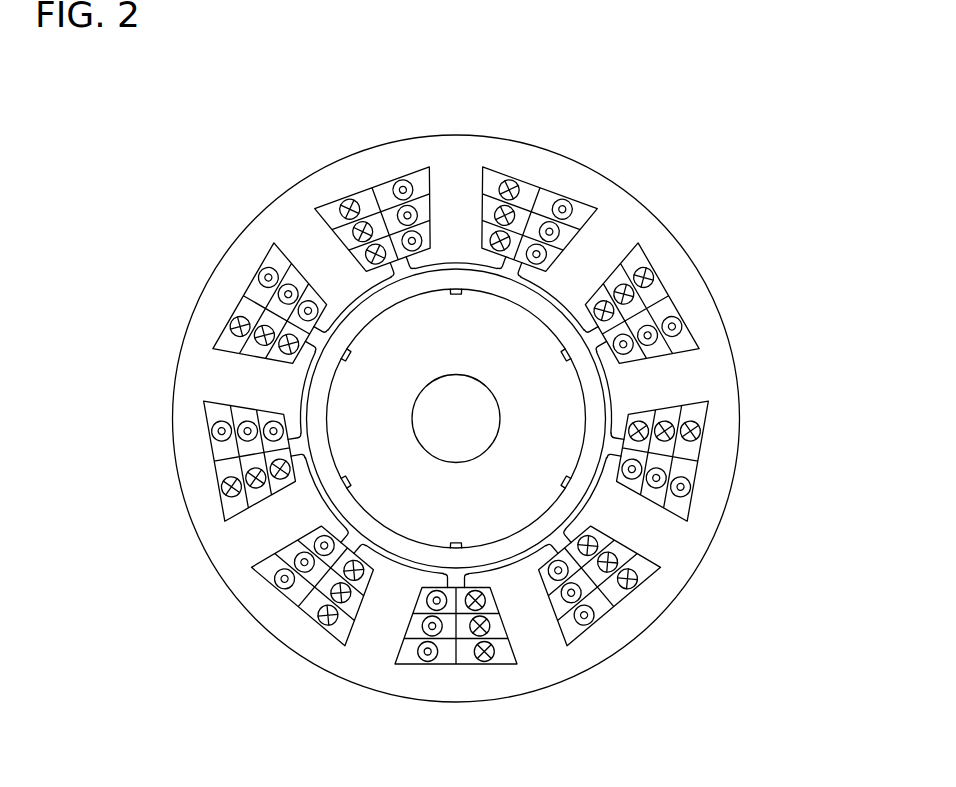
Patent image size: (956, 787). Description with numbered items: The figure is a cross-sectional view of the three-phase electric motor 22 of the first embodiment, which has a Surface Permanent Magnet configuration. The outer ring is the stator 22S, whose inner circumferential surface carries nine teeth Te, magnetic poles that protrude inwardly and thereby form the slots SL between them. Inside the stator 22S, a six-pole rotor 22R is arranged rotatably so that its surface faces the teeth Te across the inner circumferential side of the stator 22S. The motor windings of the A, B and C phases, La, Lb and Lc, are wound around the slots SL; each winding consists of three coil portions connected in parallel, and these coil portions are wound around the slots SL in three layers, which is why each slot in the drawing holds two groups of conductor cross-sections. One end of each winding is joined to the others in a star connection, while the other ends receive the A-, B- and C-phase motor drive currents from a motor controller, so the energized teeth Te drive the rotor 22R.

The three-phase electric motor 22 is at (800, 188).
The stator 22S is at (510, 160).
The rotor 22R is at (570, 442).
The slots SL is at (575, 223).
The teeth Te is at (337, 637).